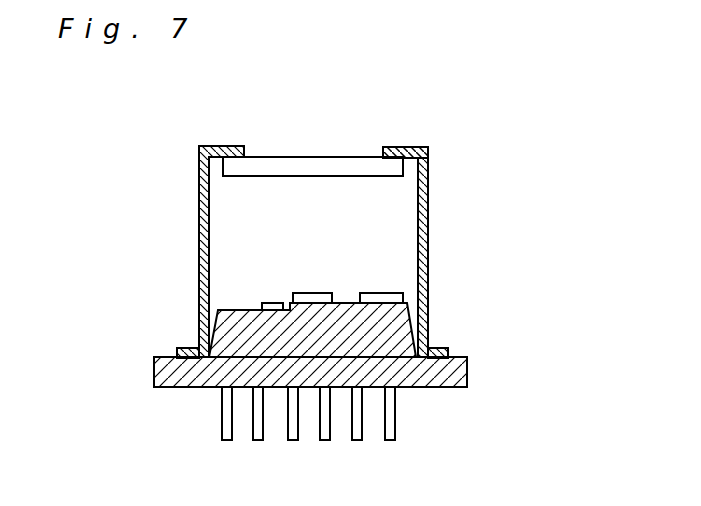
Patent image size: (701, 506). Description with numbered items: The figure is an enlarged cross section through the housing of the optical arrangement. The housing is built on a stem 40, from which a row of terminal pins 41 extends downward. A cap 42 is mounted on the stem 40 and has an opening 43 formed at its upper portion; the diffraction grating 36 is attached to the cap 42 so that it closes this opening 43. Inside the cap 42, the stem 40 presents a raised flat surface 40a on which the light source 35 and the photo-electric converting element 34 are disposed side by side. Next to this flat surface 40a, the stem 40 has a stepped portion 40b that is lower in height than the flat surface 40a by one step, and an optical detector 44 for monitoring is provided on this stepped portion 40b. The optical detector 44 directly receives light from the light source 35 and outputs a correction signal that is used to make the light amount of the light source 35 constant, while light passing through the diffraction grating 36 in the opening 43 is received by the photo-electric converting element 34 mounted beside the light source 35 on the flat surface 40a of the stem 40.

The photo-electric converting element 34 is at (383, 293).
The light source 35 is at (320, 293).
The diffraction grating 36 is at (310, 165).
The stem 40 is at (440, 379).
The flat surface 40a is at (345, 303).
The stepped portion 40b is at (238, 310).
The terminal pins 41 is at (222, 425).
The cap 42 is at (425, 192).
The opening 43 is at (383, 150).
The optical detector 44 is at (273, 303).